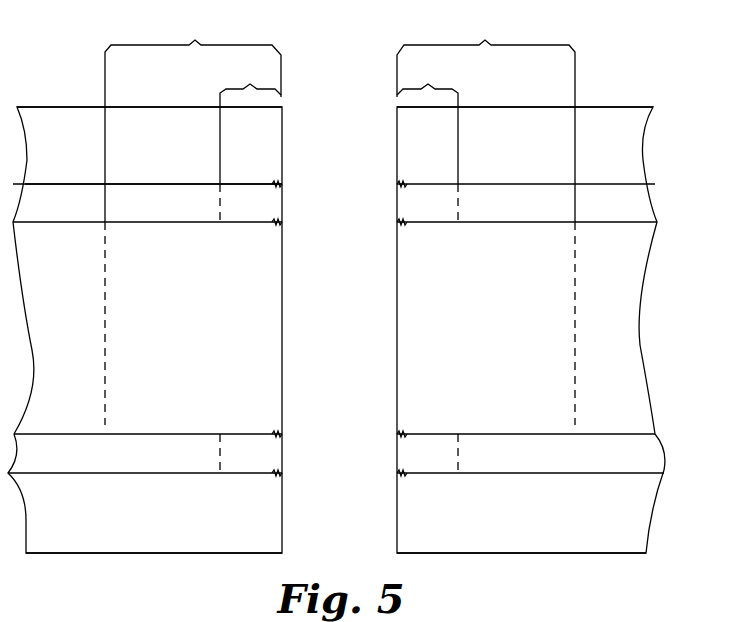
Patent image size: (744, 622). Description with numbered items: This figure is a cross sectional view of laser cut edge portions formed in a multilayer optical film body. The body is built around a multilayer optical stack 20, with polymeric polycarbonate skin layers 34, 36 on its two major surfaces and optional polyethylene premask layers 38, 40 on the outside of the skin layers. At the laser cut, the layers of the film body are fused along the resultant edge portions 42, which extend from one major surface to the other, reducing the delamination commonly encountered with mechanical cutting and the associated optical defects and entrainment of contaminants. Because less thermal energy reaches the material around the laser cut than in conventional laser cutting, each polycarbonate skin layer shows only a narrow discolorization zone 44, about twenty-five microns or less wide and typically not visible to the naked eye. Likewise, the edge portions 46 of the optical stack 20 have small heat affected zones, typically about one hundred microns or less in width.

The multilayer optical stack 20 is at (622, 351).
The polymeric skin layer 34 is at (636, 200).
The polymeric skin layer 36 is at (640, 460).
The premask layer 38 is at (628, 141).
The premask layer 40 is at (630, 522).
The edge portions 42 is at (281, 184).
The discolorization zone 44 is at (339, 267).
The edge portions of the optical stack 46 is at (340, 220).